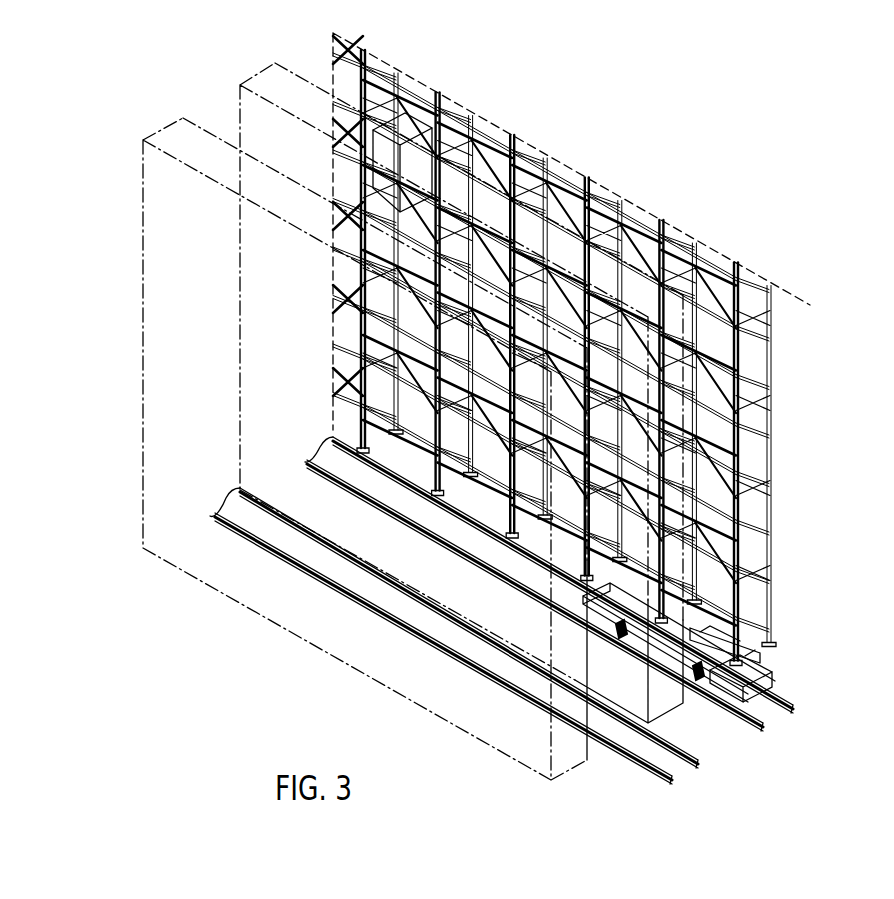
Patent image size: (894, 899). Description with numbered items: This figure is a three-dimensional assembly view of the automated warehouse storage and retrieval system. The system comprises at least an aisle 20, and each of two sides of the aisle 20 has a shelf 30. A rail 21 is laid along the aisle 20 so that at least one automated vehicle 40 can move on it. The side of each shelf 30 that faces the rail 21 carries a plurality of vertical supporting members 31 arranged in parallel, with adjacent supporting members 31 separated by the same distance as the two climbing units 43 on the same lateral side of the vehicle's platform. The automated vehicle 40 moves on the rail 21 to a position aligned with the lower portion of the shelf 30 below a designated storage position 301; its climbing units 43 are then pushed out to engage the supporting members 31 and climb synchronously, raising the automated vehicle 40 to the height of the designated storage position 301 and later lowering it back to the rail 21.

The aisle 20 is at (311, 63).
The rail 21 is at (422, 634).
The shelf 30 is at (459, 348).
The supporting member 31 is at (438, 92).
The designated storage position 301 is at (720, 423).
The automated vehicle 40 is at (790, 678).
The climbing unit 43 is at (697, 670).